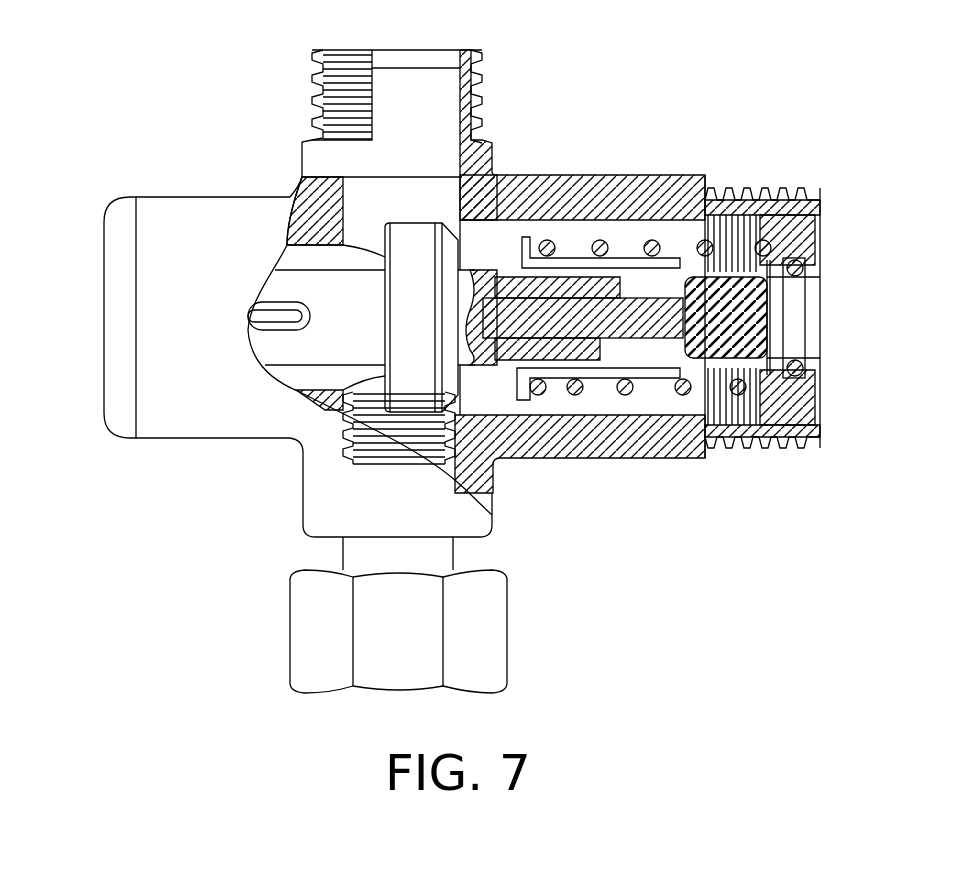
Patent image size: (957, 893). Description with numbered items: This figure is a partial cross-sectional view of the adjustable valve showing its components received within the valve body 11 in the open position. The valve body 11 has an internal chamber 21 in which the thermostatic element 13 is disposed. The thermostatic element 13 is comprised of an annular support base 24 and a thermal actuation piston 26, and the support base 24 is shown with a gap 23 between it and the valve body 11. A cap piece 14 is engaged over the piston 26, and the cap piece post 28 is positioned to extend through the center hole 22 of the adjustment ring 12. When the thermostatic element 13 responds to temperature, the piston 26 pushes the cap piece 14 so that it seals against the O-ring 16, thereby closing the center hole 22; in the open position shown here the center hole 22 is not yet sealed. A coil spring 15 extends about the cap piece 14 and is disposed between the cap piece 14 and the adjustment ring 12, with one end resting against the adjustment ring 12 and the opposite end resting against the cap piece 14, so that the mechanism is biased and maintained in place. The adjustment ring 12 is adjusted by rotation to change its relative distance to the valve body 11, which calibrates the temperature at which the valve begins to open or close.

The valve body 11 is at (205, 195).
The thermostatic element 13 is at (398, 220).
The gap 23 is at (462, 232).
The internal chamber 21 is at (652, 176).
The coil spring 15 is at (600, 236).
The thermal actuation piston 26 is at (580, 320).
The cap piece 14 is at (595, 380).
The cap piece post 28 is at (752, 308).
The adjustment ring 12 is at (817, 233).
The center hole 22 is at (817, 285).
The O-ring 16 is at (810, 350).
The annular support base 24 is at (420, 390).